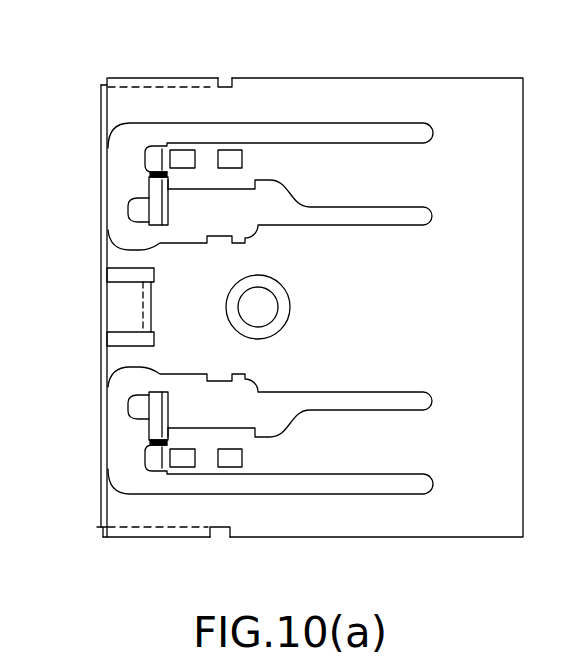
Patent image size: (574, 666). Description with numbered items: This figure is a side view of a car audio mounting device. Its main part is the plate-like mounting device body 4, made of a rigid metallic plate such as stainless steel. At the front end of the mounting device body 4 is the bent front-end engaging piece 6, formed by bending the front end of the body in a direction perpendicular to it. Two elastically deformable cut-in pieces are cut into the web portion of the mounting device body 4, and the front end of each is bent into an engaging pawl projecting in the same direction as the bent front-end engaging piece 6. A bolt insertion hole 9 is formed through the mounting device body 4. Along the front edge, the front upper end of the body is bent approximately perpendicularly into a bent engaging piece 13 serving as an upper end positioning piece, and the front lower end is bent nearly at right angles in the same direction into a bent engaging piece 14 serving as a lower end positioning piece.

The mounting device body 4 is at (400, 90).
The bent front-end engaging piece 6 is at (100, 305).
The bolt insertion hole 9 is at (258, 307).
The bent engaging piece 13 is at (165, 78).
The bent engaging piece 14 is at (160, 538).